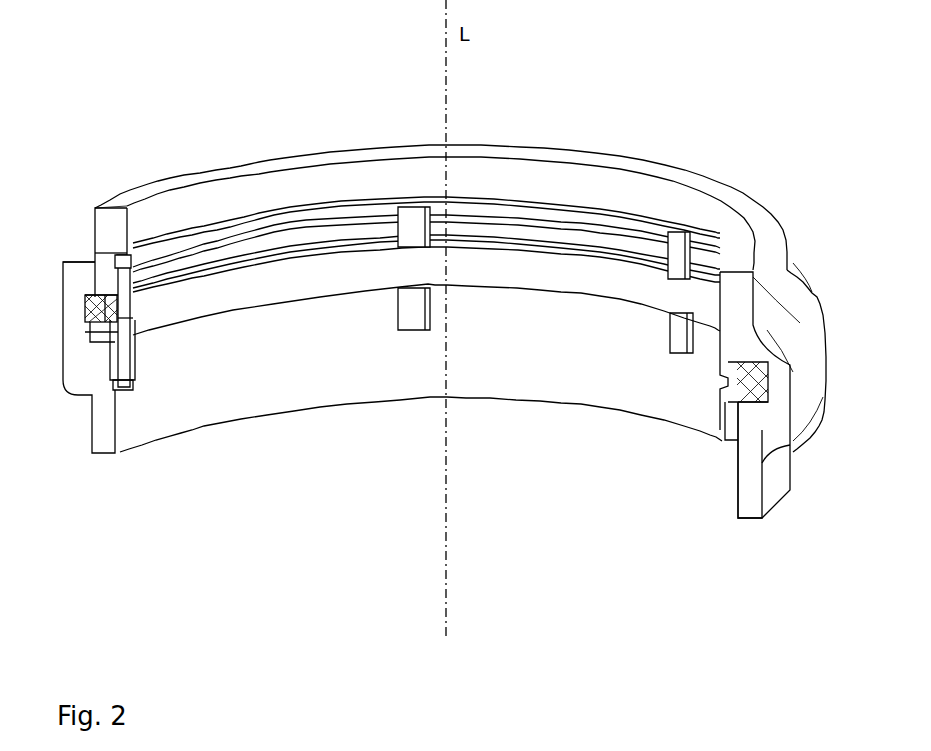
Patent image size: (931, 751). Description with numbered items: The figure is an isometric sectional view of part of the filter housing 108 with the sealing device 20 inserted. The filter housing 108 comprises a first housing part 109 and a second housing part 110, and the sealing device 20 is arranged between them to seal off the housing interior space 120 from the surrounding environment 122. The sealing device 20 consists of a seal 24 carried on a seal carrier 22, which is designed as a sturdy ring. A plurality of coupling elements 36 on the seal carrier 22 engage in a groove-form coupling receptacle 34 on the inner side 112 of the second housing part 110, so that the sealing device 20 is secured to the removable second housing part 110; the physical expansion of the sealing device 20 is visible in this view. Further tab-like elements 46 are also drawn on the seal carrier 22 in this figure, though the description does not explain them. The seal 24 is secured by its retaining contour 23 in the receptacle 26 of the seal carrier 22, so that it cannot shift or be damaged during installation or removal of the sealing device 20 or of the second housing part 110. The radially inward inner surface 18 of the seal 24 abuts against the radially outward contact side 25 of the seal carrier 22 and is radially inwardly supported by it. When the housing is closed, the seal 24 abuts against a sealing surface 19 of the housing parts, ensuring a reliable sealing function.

The filter housing 108 is at (827, 184).
The second housing part 110 is at (761, 215).
The first housing part 109 is at (787, 473).
The inner side 112 is at (241, 210).
The housing interior space 120 is at (256, 388).
The surrounding environment 122 is at (54, 450).
The seal carrier 22 is at (208, 303).
The coupling elements 36 is at (145, 268).
The lower retaining tab 46 is at (118, 387).
The coupling receptacle 34 is at (123, 255).
The seal 24 is at (95, 303).
The contact side 25 is at (113, 318).
The retaining contour 23 is at (115, 318).
The inner surface 18 is at (113, 337).
The sealing surface 19 is at (113, 342).
The receptacle 26 is at (120, 320).
The sealing device 20 is at (135, 405).